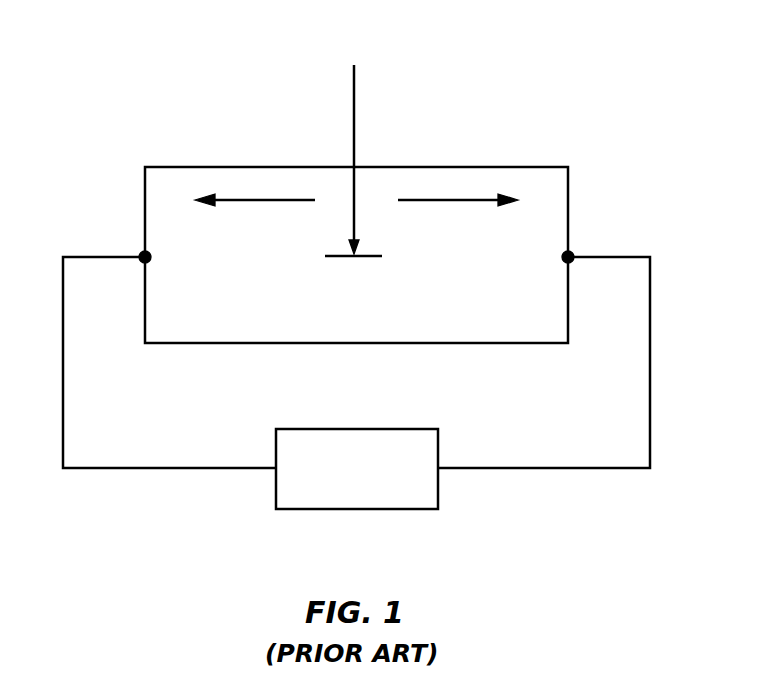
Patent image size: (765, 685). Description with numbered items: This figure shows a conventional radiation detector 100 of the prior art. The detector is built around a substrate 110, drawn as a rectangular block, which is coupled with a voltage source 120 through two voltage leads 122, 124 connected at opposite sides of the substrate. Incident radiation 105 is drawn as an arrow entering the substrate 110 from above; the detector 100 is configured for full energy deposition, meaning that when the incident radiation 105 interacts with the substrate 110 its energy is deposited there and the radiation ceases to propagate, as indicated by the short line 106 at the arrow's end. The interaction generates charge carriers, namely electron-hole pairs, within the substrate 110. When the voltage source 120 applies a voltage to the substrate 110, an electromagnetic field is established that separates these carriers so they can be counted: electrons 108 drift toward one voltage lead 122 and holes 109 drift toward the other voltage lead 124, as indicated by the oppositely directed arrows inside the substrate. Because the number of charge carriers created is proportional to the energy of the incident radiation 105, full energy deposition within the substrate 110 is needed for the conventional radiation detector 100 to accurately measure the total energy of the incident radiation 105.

The conventional radiation detector 100 is at (531, 60).
The incident radiation 105 is at (354, 110).
The line 106 is at (366, 257).
The electrons 108 is at (268, 201).
The holes 109 is at (435, 201).
The substrate 110 is at (356, 255).
The voltage source 120 is at (372, 510).
The voltage lead 122 is at (95, 257).
The voltage lead 124 is at (615, 257).